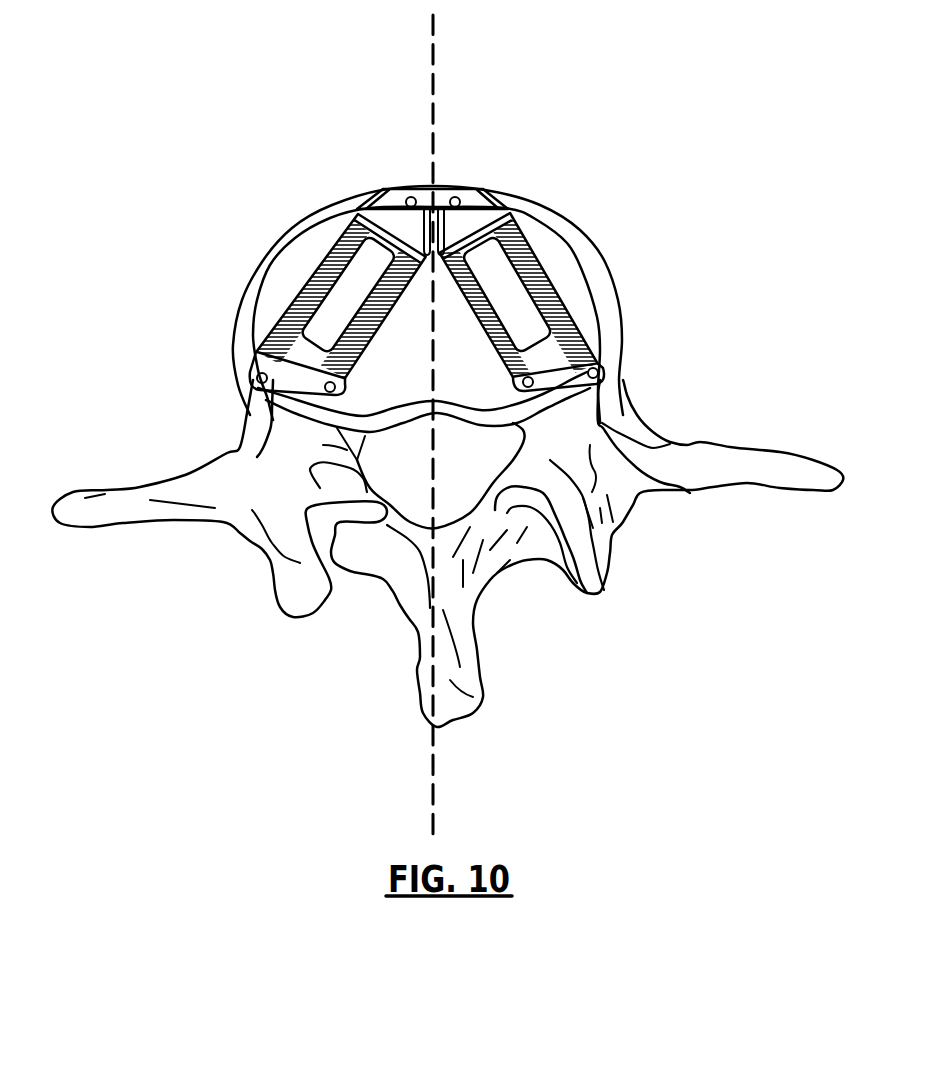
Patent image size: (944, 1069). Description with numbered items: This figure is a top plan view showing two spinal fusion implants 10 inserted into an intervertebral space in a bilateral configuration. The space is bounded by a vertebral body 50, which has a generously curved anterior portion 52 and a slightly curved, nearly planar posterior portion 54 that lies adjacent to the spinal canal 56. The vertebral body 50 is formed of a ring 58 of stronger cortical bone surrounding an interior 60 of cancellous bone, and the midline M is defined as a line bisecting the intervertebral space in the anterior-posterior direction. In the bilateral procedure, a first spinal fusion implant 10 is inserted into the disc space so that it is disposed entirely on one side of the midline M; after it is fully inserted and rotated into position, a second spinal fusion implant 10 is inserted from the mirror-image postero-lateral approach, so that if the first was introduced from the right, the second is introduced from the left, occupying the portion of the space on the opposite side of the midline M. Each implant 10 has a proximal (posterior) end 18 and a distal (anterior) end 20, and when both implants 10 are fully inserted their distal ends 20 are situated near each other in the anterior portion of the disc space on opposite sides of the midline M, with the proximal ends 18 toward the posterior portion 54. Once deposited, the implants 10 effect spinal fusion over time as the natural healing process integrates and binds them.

The midline M is at (433, 68).
The spinal fusion implant 10 is at (340, 237).
The proximal (posterior) end 18 is at (258, 368).
The distal (anterior) end 20 is at (398, 198).
The vertebral body 50 is at (603, 313).
The anterior portion 52 is at (567, 228).
The posterior portion 54 is at (563, 407).
The spinal canal 56 is at (415, 468).
The ring 58 is at (270, 262).
The interior 60 is at (417, 377).